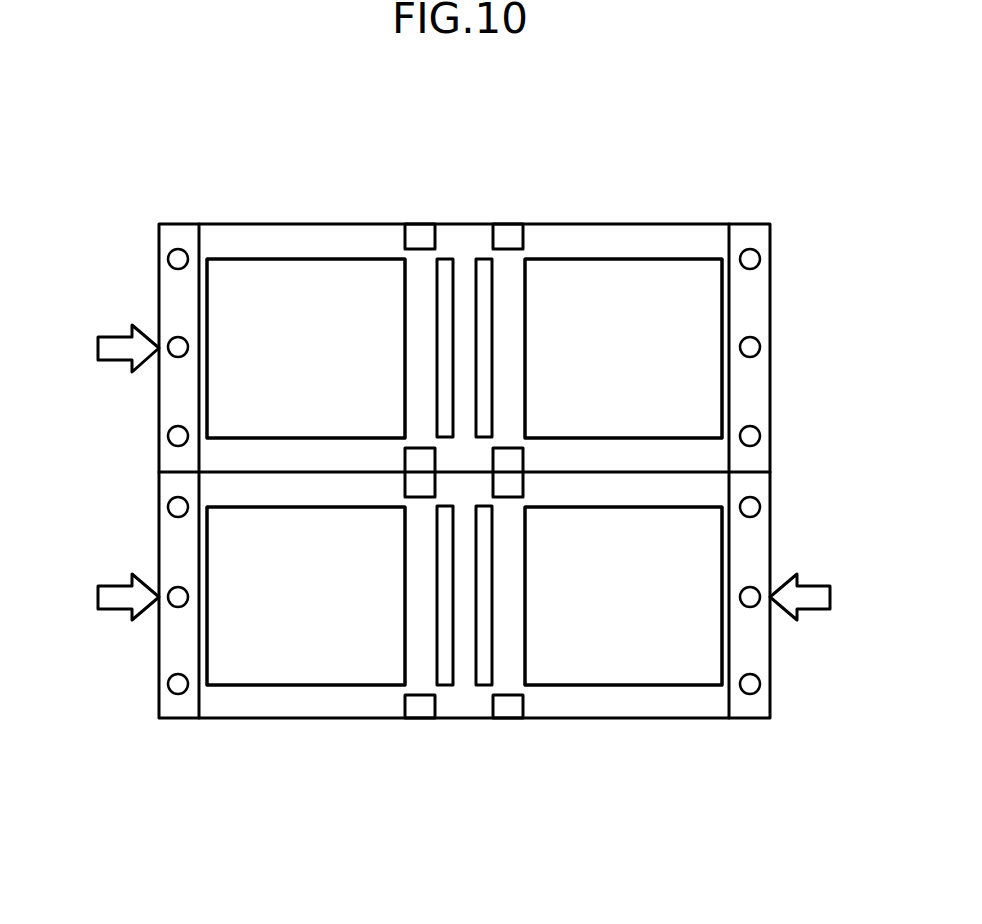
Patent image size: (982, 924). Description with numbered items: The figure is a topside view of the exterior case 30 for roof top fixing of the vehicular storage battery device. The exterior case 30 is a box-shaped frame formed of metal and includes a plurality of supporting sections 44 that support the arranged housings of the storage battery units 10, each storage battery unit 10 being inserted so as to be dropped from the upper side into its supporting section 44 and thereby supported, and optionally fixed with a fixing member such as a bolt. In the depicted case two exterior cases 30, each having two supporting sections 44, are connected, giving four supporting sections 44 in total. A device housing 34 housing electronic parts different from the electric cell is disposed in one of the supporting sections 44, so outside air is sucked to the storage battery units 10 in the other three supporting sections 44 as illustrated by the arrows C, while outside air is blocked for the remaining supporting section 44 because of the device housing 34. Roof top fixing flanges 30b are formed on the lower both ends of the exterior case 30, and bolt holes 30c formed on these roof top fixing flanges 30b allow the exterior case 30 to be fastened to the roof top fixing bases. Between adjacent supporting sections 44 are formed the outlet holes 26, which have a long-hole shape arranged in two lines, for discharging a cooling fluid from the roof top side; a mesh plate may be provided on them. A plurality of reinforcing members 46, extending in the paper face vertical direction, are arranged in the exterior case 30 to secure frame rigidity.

The storage battery unit 10 is at (342, 297).
The outlet holes 26 is at (443, 270).
The exterior case 30 is at (287, 242).
The roof top fixing flanges 30b is at (162, 240).
The bolt holes 30c is at (742, 353).
The device housing 34 is at (678, 297).
The supporting sections 44 is at (207, 330).
The reinforcing members 46 is at (415, 233).
The arrows C is at (115, 361).